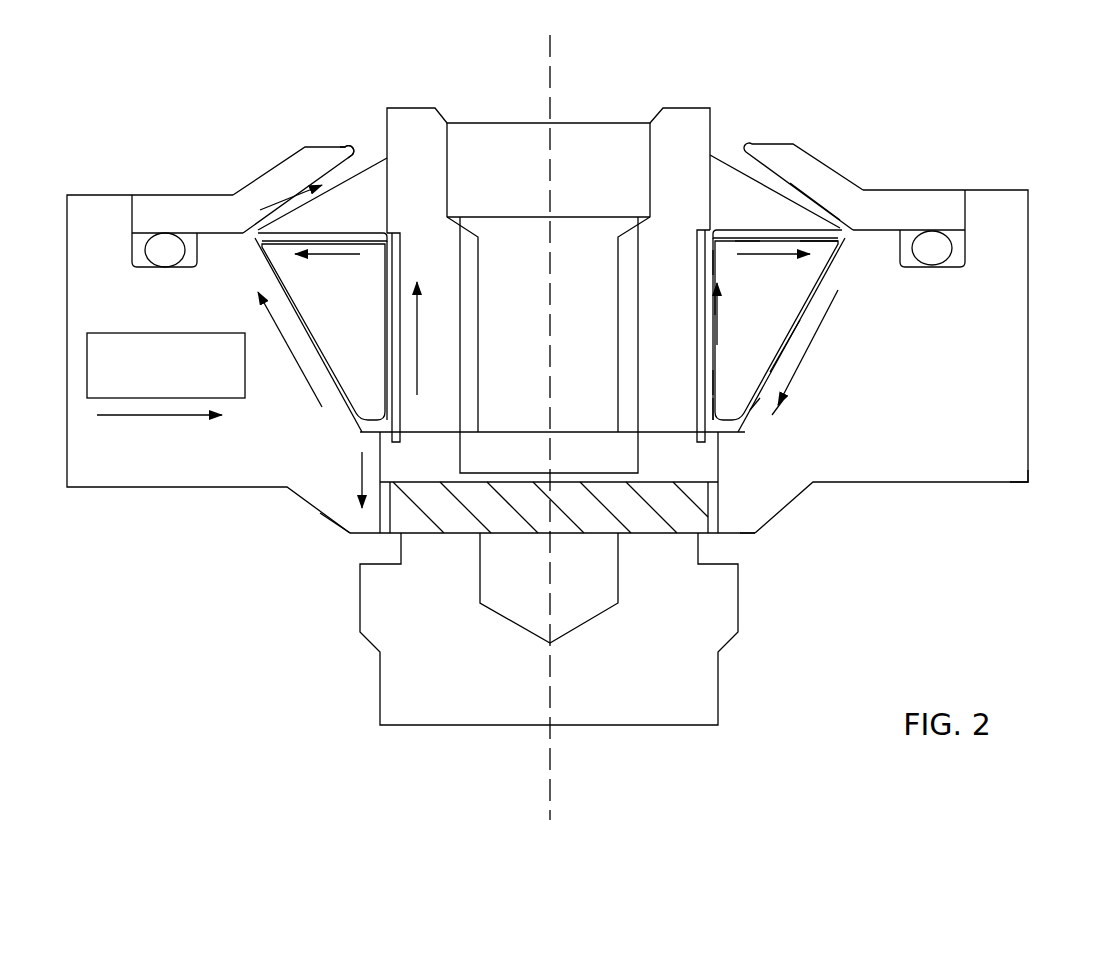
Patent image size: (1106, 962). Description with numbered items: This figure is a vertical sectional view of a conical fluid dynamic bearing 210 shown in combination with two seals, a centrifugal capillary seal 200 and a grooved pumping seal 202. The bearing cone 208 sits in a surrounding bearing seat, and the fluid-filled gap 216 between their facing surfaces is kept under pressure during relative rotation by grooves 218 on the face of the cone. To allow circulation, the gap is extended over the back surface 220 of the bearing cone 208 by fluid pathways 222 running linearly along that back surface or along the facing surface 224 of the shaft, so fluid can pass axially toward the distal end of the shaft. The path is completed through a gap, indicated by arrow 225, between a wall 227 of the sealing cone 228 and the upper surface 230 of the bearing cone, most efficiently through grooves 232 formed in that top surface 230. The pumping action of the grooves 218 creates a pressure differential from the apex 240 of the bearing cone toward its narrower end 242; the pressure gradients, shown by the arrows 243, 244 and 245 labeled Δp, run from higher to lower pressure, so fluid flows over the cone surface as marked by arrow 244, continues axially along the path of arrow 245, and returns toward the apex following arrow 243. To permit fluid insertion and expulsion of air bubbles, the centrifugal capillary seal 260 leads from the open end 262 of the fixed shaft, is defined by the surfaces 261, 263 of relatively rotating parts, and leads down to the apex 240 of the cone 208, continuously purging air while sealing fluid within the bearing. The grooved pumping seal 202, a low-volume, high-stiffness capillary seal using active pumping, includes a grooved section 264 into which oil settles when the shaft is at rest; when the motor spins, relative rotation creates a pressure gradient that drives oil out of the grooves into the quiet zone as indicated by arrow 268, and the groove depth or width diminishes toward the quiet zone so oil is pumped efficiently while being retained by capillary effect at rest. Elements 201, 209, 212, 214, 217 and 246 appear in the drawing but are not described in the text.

The centrifugal capillary seal 200 is at (446, 93).
The lower housing body 201 is at (448, 703).
The grooved pumping seal 202 is at (418, 517).
The bearing cone 208 is at (726, 325).
The outer sealing surface 209 is at (810, 343).
The bearing 210 is at (908, 325).
The seal inner surface 212 is at (782, 345).
The housing surface 214 is at (778, 405).
The gap 216 is at (757, 400).
The seal surface 217 is at (713, 262).
The grooves 218 is at (1028, 482).
The back surface 220 is at (713, 382).
The fluid pathways 222 is at (718, 302).
The facing surface 224 is at (710, 405).
The gap arrow 225 is at (788, 258).
The wall 227 is at (773, 228).
The sealing cone 228 is at (313, 231).
The upper surface 230 is at (748, 242).
The grooves 232 is at (735, 240).
The apex 240 is at (233, 197).
The narrower end 242 is at (363, 428).
The pressure gradient arrow 243 is at (360, 254).
The pressure gradient arrow 244 is at (303, 383).
The pressure gradient arrow 245 is at (418, 342).
The flange 246 is at (285, 203).
The centrifugal capillary seal 260 is at (756, 164).
The surface 261 is at (345, 188).
The open end 262 is at (365, 170).
The surface 263 is at (342, 150).
The groove annulus 264 is at (748, 540).
The flow arrow 268 is at (335, 507).